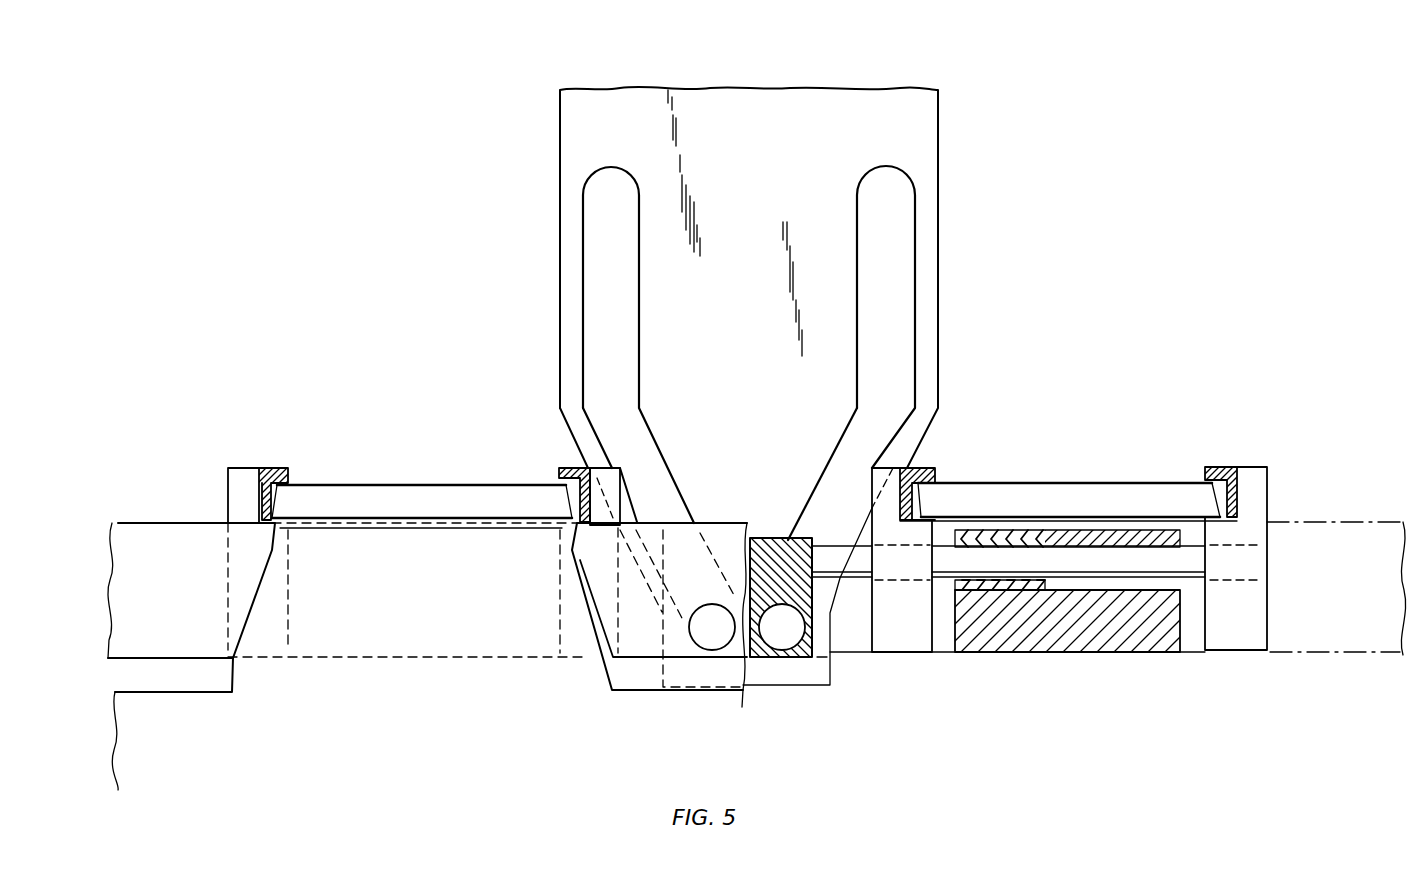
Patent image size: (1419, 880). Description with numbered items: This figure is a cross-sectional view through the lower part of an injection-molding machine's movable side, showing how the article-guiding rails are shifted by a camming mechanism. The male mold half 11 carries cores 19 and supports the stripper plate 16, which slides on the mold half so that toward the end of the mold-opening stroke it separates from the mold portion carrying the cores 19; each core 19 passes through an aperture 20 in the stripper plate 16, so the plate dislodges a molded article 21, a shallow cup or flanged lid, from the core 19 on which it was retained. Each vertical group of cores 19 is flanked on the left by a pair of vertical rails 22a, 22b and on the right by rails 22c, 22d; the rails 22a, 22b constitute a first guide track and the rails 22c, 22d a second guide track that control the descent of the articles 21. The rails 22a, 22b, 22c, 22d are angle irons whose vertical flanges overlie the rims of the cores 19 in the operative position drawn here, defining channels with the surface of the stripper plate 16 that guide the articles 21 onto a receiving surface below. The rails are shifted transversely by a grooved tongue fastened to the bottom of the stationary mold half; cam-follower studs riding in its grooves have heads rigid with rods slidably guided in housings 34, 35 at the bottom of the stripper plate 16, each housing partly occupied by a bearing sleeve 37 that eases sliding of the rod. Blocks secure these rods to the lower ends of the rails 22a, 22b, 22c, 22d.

The stripper plate 16 is at (177, 537).
The male mold half 11 is at (207, 698).
The core 19 is at (272, 622).
The housing 35 is at (403, 645).
The rail 22a is at (272, 472).
The molded article 21 is at (443, 463).
The rail 22b is at (575, 468).
The aperture 20 is at (598, 630).
The bearing sleeve 37 is at (1010, 590).
The housing 34 is at (1110, 628).
The rail 22c is at (933, 464).
The rail 22d is at (1215, 477).